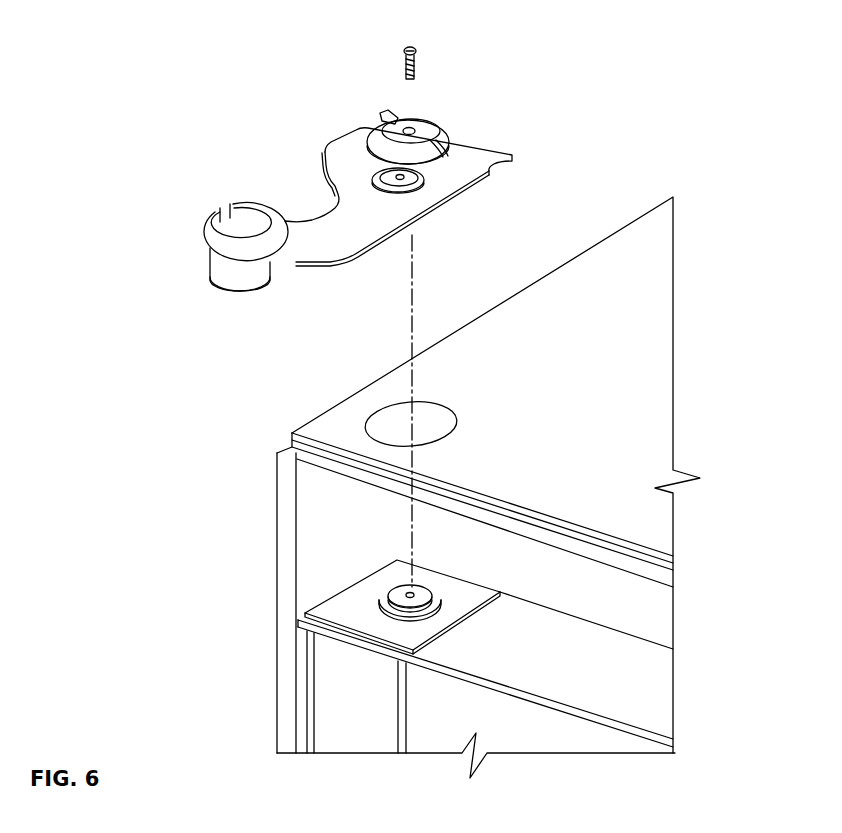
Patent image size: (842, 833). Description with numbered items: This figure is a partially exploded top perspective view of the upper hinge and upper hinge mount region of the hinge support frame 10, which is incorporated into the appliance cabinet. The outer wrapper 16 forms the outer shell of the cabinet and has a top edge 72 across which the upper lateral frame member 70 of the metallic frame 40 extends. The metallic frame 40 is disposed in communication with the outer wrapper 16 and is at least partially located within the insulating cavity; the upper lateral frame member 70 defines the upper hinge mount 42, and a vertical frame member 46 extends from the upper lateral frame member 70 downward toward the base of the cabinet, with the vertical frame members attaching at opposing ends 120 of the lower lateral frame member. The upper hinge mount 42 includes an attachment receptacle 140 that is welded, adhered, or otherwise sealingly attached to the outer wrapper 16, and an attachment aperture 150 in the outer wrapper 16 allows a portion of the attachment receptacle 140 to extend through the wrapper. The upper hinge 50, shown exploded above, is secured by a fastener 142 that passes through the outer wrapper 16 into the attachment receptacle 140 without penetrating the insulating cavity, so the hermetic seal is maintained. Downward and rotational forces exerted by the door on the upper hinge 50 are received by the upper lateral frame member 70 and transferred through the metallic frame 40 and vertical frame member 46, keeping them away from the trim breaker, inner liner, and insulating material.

The hinge support frame 10 is at (693, 733).
The outer wrapper 16 is at (633, 267).
The metallic frame 40 is at (296, 687).
The upper hinge mount 42 is at (367, 567).
The vertical frame member 46 is at (353, 700).
The upper hinge 50 is at (303, 237).
The upper lateral frame member 70 is at (623, 672).
The top edge 72 is at (490, 497).
The opposing ends 120 is at (295, 633).
The attachment receptacle 140 is at (440, 593).
The fastener 142 is at (400, 50).
The attachment aperture 150 is at (380, 410).